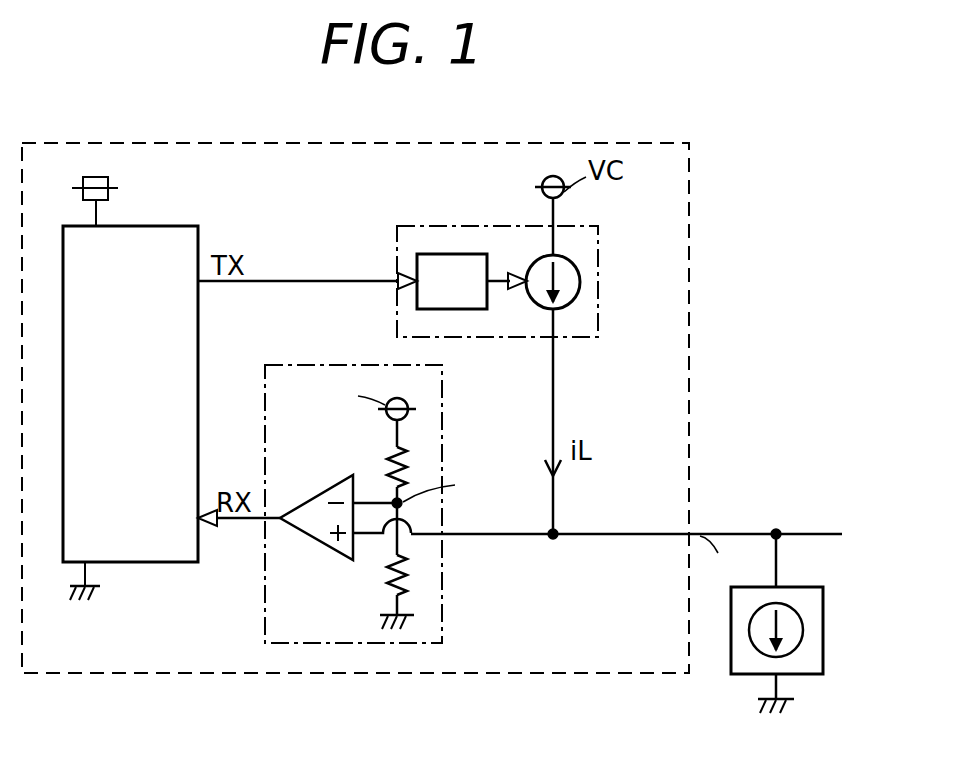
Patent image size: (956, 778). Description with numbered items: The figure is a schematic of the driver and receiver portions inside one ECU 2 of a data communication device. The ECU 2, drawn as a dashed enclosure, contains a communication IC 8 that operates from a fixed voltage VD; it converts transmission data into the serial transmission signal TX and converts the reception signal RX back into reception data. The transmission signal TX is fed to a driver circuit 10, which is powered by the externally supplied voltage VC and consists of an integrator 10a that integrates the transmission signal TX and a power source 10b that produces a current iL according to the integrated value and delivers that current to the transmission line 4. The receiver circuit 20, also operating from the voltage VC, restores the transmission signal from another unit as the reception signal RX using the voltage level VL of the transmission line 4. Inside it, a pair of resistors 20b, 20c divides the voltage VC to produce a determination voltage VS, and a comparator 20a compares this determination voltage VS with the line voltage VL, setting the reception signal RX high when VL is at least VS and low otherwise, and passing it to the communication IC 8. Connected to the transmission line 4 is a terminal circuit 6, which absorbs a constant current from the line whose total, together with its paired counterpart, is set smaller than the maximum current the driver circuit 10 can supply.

The ECU 2 is at (689, 214).
The transmission line 4 is at (727, 533).
The terminal circuit 6 is at (812, 587).
The communication IC 8 is at (181, 226).
The driver circuit 10 is at (600, 238).
The integrator 10a is at (467, 254).
The power source 10b is at (578, 270).
The receiver circuit 20 is at (283, 363).
The comparator 20a is at (314, 492).
The resistor 20b is at (407, 457).
The resistor 20c is at (405, 580).